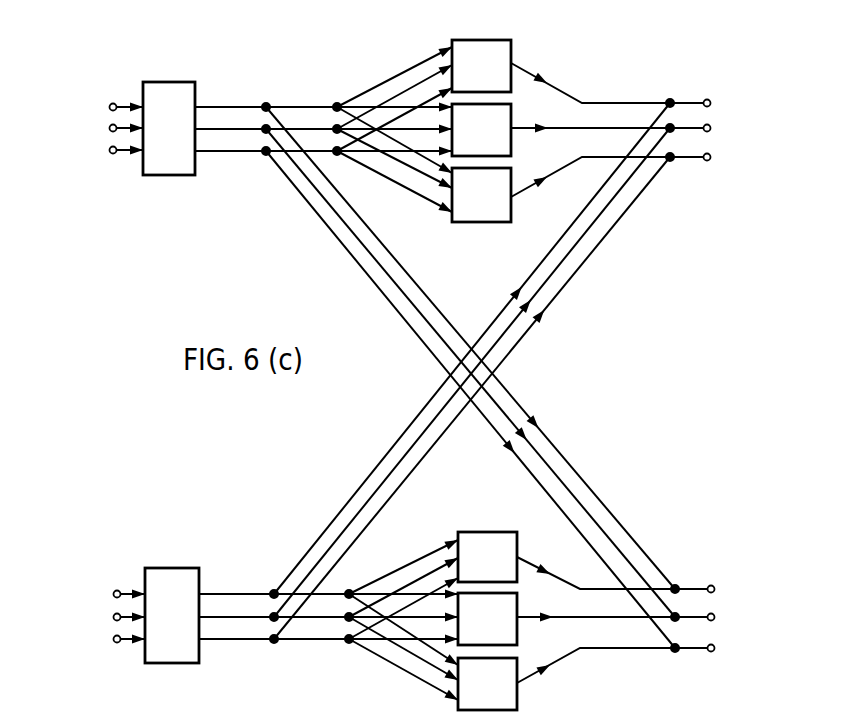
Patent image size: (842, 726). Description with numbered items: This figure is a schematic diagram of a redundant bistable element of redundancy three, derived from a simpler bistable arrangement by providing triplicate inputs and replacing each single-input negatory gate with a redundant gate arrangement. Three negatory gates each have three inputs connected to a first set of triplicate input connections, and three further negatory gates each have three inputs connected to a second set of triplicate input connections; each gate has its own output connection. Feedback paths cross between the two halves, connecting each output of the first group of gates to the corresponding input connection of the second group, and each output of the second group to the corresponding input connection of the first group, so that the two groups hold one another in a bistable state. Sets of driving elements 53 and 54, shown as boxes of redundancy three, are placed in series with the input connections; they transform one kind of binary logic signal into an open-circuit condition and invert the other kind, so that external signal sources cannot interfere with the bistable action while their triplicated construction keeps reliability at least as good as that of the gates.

The set of driving elements 53 is at (168, 68).
The set of driving elements 54 is at (171, 568).